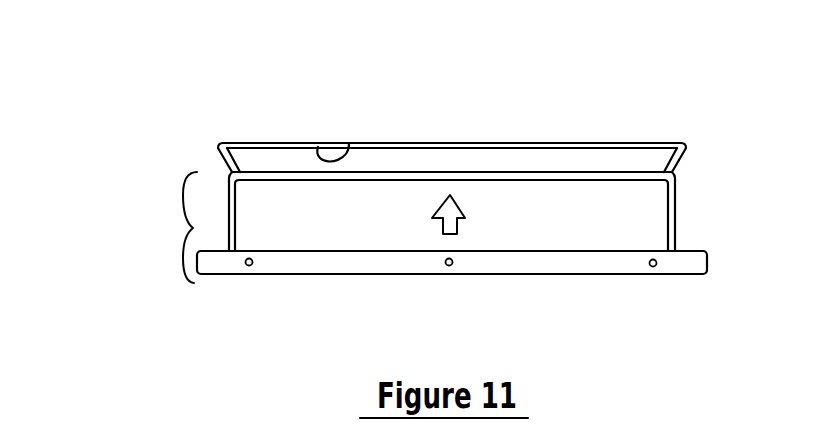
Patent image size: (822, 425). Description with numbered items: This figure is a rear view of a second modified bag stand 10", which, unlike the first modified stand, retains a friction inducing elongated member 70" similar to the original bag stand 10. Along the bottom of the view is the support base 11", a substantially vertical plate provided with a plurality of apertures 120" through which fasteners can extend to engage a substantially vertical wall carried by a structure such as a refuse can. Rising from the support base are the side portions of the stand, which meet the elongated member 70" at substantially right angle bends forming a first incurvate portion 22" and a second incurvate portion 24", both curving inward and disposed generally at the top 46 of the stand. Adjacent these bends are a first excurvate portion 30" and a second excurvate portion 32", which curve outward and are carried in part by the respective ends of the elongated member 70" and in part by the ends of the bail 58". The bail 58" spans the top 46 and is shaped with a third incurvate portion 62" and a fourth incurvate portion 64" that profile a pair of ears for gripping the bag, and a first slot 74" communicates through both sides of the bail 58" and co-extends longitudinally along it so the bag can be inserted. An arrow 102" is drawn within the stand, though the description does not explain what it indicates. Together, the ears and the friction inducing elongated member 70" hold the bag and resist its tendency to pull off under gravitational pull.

The bag stand 10 is at (134, 124).
The support base 11 is at (176, 227).
The first incurvate portion 22 is at (238, 182).
The second incurvate portion 24 is at (677, 181).
The first excurvate portion 30 is at (214, 169).
The second excurvate portion 32 is at (691, 170).
The top 46 is at (297, 95).
The bail 58 is at (447, 143).
The third incurvate portion 62 is at (219, 150).
The fourth incurvate portion 64 is at (683, 142).
The elongated top member 70 is at (350, 181).
The first slot 74 is at (349, 143).
The direction arrow 102 is at (457, 222).
The apertures 120 is at (248, 266).